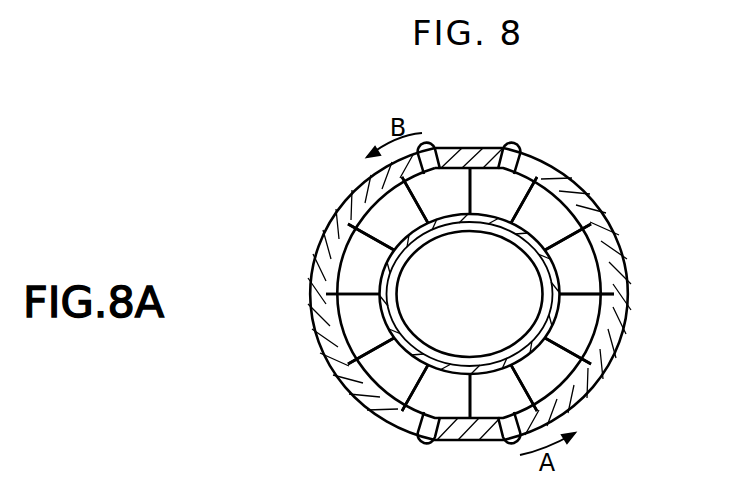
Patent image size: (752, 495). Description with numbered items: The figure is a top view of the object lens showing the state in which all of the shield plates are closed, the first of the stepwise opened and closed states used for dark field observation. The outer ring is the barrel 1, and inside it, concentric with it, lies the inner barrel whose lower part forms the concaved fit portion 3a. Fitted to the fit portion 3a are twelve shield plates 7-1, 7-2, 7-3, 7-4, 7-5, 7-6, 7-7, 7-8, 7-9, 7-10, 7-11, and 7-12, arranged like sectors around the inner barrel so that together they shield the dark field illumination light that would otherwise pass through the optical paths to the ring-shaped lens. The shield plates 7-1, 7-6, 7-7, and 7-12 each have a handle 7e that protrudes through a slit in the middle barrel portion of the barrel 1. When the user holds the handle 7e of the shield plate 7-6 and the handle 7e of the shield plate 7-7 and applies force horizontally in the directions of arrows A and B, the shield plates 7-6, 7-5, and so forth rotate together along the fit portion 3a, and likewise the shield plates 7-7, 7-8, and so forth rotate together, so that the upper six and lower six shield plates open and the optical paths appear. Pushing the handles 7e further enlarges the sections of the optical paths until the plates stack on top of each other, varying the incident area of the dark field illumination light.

The barrel 1 is at (612, 237).
The fit portion 3a is at (613, 290).
The handle 7e is at (433, 143).
The shield plate 7-1 is at (522, 188).
The shield plate 7-2 is at (565, 222).
The shield plate 7-3 is at (596, 268).
The shield plate 7-4 is at (590, 326).
The shield plate 7-5 is at (555, 373).
The shield plate 7-6 is at (543, 403).
The shield plate 7-7 is at (417, 187).
The shield plate 7-8 is at (377, 223).
The shield plate 7-9 is at (355, 268).
The shield plate 7-10 is at (350, 330).
The shield plate 7-11 is at (365, 375).
The shield plate 7-12 is at (400, 402).